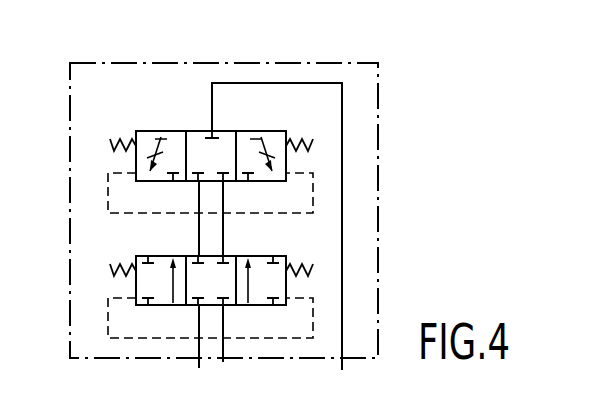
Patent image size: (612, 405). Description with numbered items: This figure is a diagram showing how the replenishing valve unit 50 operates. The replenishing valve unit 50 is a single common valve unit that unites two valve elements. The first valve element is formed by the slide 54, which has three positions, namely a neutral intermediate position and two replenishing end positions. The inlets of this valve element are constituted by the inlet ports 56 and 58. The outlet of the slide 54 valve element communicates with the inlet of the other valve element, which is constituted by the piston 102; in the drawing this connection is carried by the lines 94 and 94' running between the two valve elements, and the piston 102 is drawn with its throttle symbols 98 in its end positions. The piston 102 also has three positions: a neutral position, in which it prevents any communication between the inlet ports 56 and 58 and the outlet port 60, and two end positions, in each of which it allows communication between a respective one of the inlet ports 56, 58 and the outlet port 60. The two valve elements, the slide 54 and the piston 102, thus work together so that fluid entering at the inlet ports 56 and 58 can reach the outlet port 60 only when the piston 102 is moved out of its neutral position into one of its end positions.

The replenishing valve unit 50 is at (378, 204).
The slide 54 is at (145, 256).
The inlet port 56 is at (224, 358).
The inlet port 58 is at (198, 360).
The outlet port 60 is at (275, 83).
The connecting line 94 is at (178, 218).
The connecting line 94' is at (249, 218).
The throttle 98 is at (153, 142).
The piston 102 is at (145, 181).